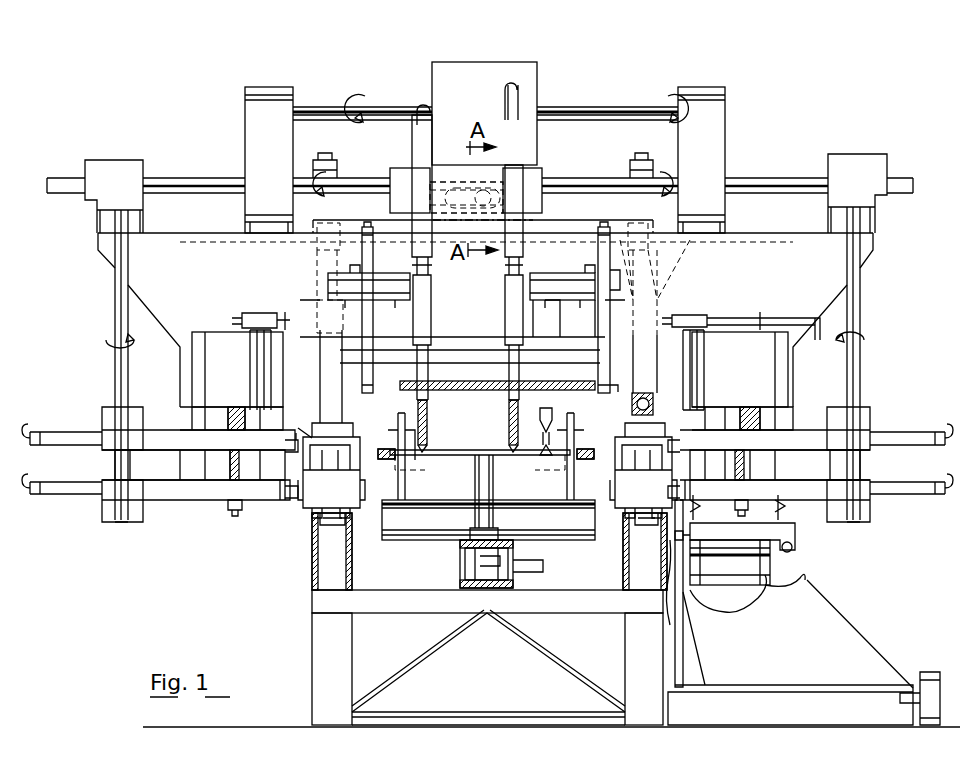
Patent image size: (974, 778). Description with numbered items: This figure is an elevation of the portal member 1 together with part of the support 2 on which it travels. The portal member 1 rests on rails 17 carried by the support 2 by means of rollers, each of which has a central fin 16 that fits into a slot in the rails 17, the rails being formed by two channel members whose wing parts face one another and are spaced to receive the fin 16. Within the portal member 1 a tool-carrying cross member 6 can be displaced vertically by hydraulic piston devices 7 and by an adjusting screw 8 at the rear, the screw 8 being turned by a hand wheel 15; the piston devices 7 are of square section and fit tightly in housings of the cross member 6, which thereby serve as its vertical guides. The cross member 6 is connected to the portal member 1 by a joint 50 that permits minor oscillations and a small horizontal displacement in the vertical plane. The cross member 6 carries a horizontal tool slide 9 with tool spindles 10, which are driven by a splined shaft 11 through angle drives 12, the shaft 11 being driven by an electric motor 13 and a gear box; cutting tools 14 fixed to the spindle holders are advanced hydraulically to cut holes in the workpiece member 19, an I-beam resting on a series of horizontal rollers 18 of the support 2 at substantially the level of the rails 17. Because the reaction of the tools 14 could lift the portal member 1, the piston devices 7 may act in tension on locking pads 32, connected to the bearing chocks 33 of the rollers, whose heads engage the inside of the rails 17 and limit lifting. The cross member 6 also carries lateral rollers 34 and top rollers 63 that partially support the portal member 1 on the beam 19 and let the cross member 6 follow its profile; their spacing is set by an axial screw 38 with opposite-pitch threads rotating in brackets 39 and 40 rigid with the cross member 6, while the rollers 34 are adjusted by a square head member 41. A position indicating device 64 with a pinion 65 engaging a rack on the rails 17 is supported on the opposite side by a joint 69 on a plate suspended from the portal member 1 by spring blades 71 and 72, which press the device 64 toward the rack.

The portal member 1 is at (652, 220).
The support 2 is at (320, 670).
The tool-carrying cross member 6 is at (210, 250).
The hydraulic piston devices 7 is at (330, 397).
The adjusting screw 8 is at (232, 464).
The horizontal tool slide 9 is at (400, 331).
The tool spindles 10 is at (505, 312).
The splined shaft 11 is at (193, 190).
The angle drives 12 is at (118, 180).
The electric motor 13 is at (432, 84).
The cutting tools 14 is at (545, 426).
The hand wheel 15 is at (235, 508).
The central fin 16 is at (335, 458).
The rails 17 is at (312, 560).
The horizontal rollers 18 is at (438, 545).
The workpiece member 19 is at (470, 462).
The locking pads 32 is at (322, 520).
The bearing members or chocks 33 is at (305, 433).
The lateral rollers 34 is at (392, 462).
The axial screw 38 is at (486, 388).
The bracket 39 is at (603, 385).
The bracket 40 is at (366, 385).
The square head member 41 is at (632, 396).
The joint 50 is at (520, 195).
The top rollers 63 is at (425, 442).
The position indicating device 64 is at (755, 590).
The pinion 65 is at (670, 610).
The joint 69 is at (792, 550).
The spring blade 71 is at (698, 505).
The spring blade 72 is at (785, 508).